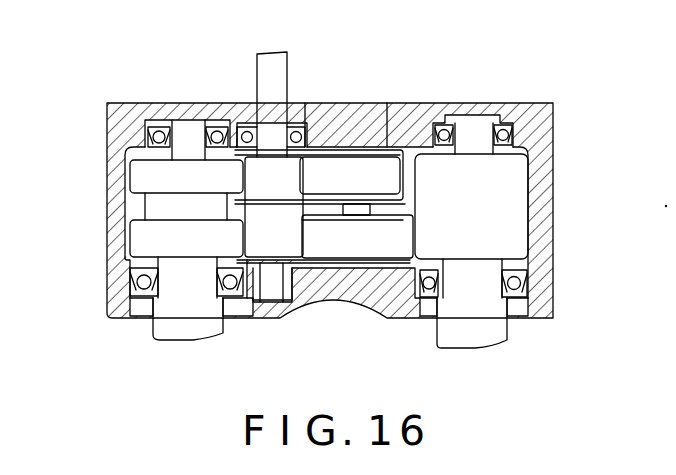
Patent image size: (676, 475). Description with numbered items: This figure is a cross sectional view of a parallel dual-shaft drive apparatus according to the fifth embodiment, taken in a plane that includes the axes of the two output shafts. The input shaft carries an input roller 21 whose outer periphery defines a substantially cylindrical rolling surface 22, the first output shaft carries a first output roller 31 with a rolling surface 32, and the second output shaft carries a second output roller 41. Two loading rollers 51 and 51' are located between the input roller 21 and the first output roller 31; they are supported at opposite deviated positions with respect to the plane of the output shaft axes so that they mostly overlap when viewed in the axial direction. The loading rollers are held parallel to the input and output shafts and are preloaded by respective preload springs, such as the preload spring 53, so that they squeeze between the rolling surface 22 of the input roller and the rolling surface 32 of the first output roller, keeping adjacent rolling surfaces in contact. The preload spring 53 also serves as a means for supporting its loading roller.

The second output roller 41 is at (152, 172).
The input roller 21 is at (257, 180).
The rolling surface 22 is at (247, 241).
The loading roller 51 is at (357, 305).
The loading roller 51' is at (350, 99).
The preload spring 53 is at (384, 152).
The first output roller 31 is at (497, 198).
The rolling surface 32 is at (529, 229).